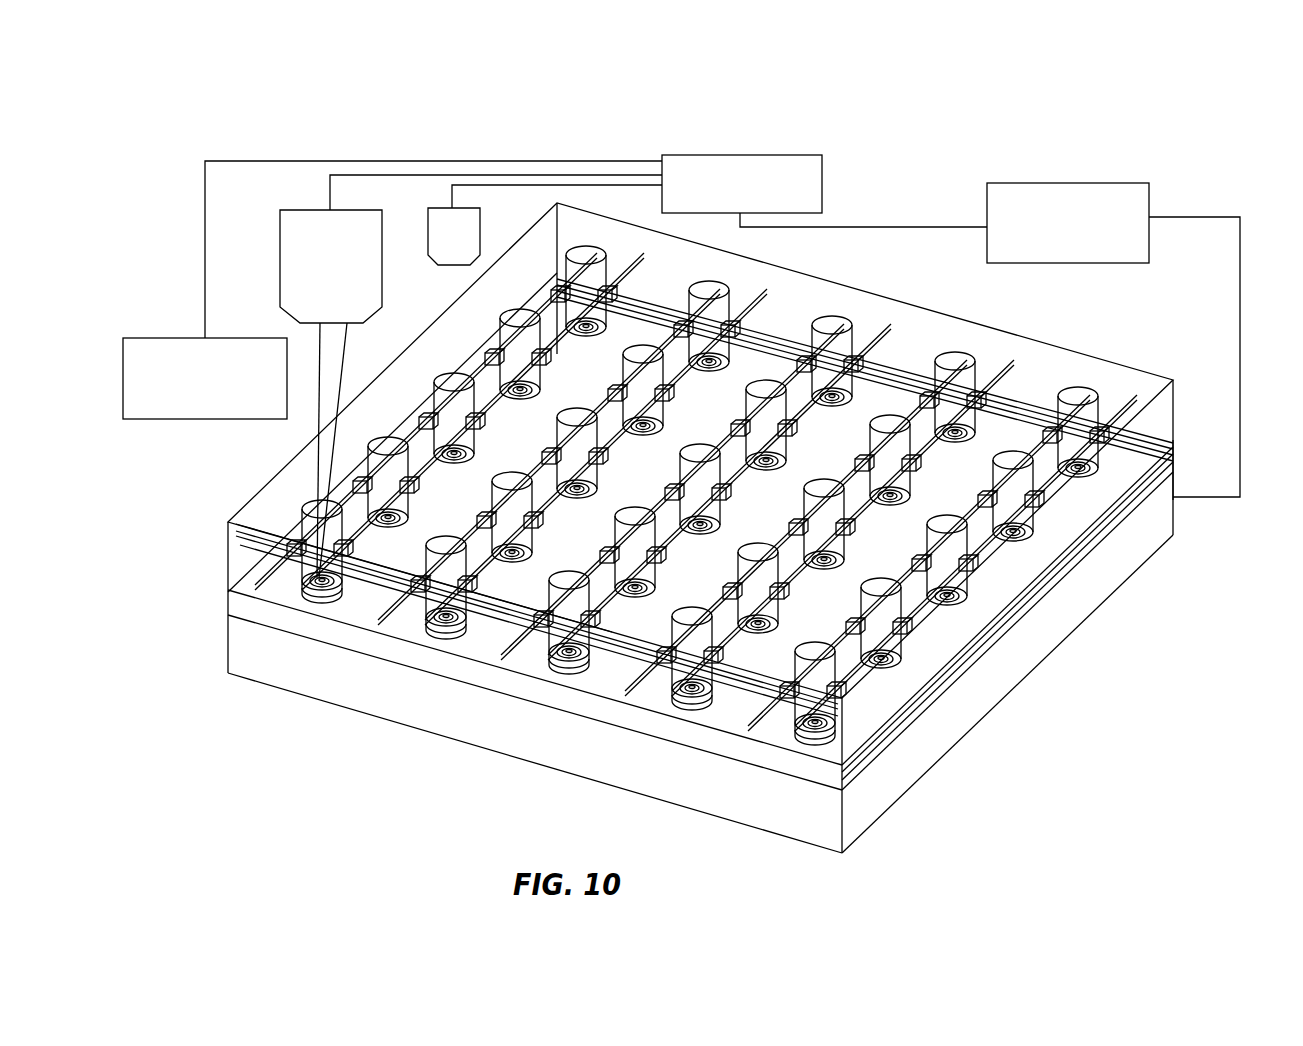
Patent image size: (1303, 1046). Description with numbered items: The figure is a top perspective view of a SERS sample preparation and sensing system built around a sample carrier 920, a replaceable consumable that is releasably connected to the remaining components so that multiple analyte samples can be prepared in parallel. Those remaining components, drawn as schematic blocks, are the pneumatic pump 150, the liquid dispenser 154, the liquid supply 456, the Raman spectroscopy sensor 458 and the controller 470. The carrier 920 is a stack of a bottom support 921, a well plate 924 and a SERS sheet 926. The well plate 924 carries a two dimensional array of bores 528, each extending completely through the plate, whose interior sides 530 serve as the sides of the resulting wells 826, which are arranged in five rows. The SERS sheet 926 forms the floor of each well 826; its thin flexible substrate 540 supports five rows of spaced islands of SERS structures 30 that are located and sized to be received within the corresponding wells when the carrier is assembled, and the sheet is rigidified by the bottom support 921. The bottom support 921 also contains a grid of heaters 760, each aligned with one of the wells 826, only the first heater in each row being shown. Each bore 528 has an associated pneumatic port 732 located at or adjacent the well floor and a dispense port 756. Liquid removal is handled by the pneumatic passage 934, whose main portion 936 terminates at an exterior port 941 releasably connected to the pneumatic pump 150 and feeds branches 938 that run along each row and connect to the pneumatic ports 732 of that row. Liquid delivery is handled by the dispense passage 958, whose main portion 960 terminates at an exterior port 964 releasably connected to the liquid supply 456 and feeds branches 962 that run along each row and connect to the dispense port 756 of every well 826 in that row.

The SERS structures 30 is at (595, 485).
The pneumatic pump 150 is at (1092, 183).
The liquid dispenser 154 is at (481, 232).
The liquid supply 456 is at (124, 373).
The Raman spectroscopy sensor 458 is at (280, 262).
The controller 470 is at (806, 155).
The bore 528 is at (550, 413).
The interior sides 530 is at (553, 417).
The substrate 540 is at (1080, 547).
The pneumatic port 732 is at (790, 712).
The dispense port 756 is at (777, 548).
The heaters 760 is at (312, 607).
The wells 826 is at (726, 550).
The sample carrier 920 is at (1125, 360).
The bottom support 921 is at (243, 645).
The well plate 924 is at (222, 560).
The SERS sheet 926 is at (220, 613).
The pneumatic passage 934 is at (1174, 440).
The main portion 936 is at (1017, 410).
The branches 938 is at (460, 540).
The exterior port 941 is at (1180, 470).
The dispense passage 958 is at (610, 670).
The main portion 960 is at (370, 577).
The branches 962 is at (857, 548).
The exterior port 964 is at (238, 572).